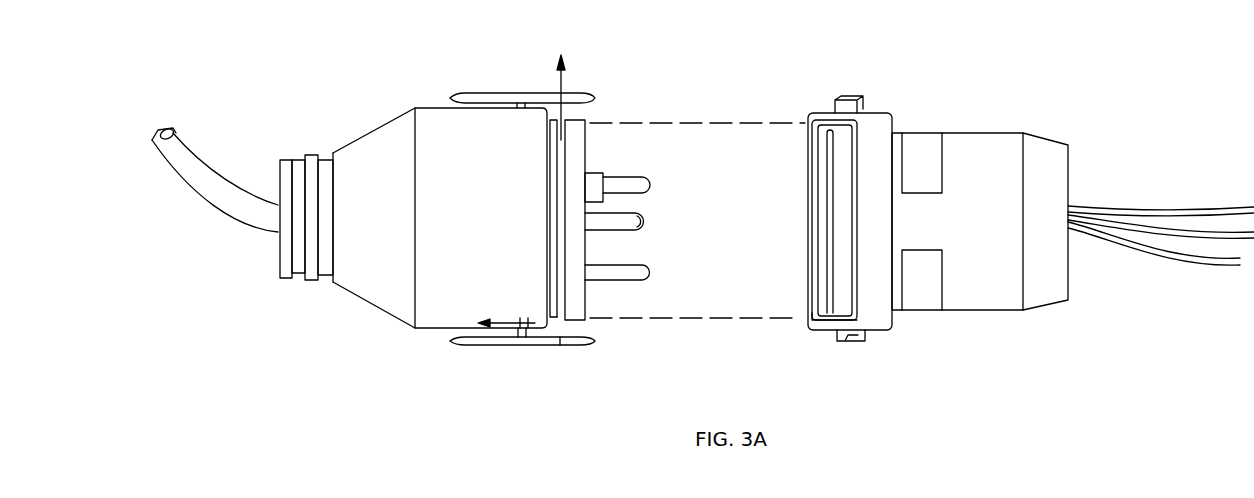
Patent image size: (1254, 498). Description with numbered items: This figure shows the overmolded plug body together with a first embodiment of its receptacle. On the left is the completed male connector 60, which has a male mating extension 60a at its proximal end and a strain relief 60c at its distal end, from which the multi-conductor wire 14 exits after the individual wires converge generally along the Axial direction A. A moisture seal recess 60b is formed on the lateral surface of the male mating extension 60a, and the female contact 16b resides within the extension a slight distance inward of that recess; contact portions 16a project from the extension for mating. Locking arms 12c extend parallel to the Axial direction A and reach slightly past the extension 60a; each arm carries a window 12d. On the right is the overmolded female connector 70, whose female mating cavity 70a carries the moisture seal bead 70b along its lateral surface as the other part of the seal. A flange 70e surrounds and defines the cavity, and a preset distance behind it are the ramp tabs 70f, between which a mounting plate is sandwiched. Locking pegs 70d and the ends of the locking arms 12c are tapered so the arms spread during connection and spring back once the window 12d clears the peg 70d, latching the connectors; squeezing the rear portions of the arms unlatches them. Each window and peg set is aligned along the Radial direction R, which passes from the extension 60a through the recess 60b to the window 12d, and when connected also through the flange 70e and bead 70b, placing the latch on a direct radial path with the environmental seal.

The multi-conductor wire 14 is at (197, 176).
The male connector 60 is at (383, 331).
The male mating extension 60a is at (575, 113).
The moisture seal recess 60b is at (586, 319).
The strain relief 60c is at (315, 278).
The female contact 16b is at (586, 144).
The plug prongs 16a is at (643, 272).
The locking arms 12c is at (507, 346).
The window 12d is at (560, 341).
The Radial direction R is at (560, 77).
The Axial direction A is at (505, 346).
The female connector 70 is at (1094, 283).
The female mating cavity 70a is at (845, 143).
The moisture seal bead 70b is at (822, 318).
The locking pegs 70d is at (838, 342).
The flange 70e is at (877, 226).
The ramp tabs 70f is at (922, 300).